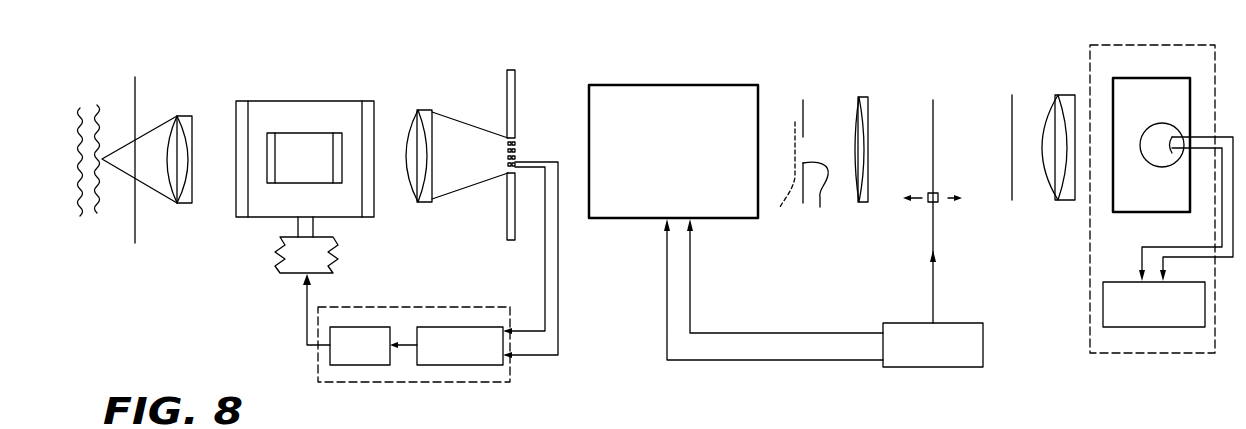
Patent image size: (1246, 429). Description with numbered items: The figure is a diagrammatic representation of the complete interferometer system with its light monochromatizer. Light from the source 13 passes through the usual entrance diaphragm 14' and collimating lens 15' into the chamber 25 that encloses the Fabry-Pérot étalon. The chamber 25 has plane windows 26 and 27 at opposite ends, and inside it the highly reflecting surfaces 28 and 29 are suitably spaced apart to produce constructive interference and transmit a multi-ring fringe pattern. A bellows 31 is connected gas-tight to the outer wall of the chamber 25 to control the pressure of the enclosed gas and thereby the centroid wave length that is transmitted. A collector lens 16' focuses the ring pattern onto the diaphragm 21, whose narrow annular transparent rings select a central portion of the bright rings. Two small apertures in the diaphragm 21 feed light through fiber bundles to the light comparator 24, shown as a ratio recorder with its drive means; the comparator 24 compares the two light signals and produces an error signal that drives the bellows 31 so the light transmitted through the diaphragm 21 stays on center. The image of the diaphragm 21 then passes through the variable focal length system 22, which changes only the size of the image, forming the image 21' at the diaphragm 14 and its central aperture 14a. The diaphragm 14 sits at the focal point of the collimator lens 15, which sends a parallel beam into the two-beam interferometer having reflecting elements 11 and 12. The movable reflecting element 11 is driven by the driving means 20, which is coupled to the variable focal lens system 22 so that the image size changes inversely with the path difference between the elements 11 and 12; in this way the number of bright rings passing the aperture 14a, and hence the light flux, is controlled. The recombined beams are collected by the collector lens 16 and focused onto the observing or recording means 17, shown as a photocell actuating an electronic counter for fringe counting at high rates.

The light source 13 is at (88, 100).
The entrance diaphragm 14' is at (155, 151).
The collimating lens 15' is at (147, 179).
The chamber 25 is at (328, 112).
The plane window 26 is at (242, 104).
The plane window 27 is at (367, 103).
The highly reflecting surface 28 is at (270, 174).
The highly reflecting surface 29 is at (338, 177).
The bellows 31 is at (280, 256).
The collector lens 16' is at (457, 175).
The diaphragm 21 is at (506, 200).
The light comparator 24 is at (500, 370).
The variable focal length system 22 is at (617, 207).
The driving means 20 is at (983, 360).
The diaphragm 14 is at (810, 133).
The aperture 14a is at (826, 196).
The image of the diaphragm 21' is at (782, 177).
The collimator lens 15 is at (867, 132).
The reflecting element 11 is at (933, 100).
The reflecting element 12 is at (1012, 102).
The collector lens 16 is at (1058, 130).
The observing or recording means 17 is at (1168, 343).